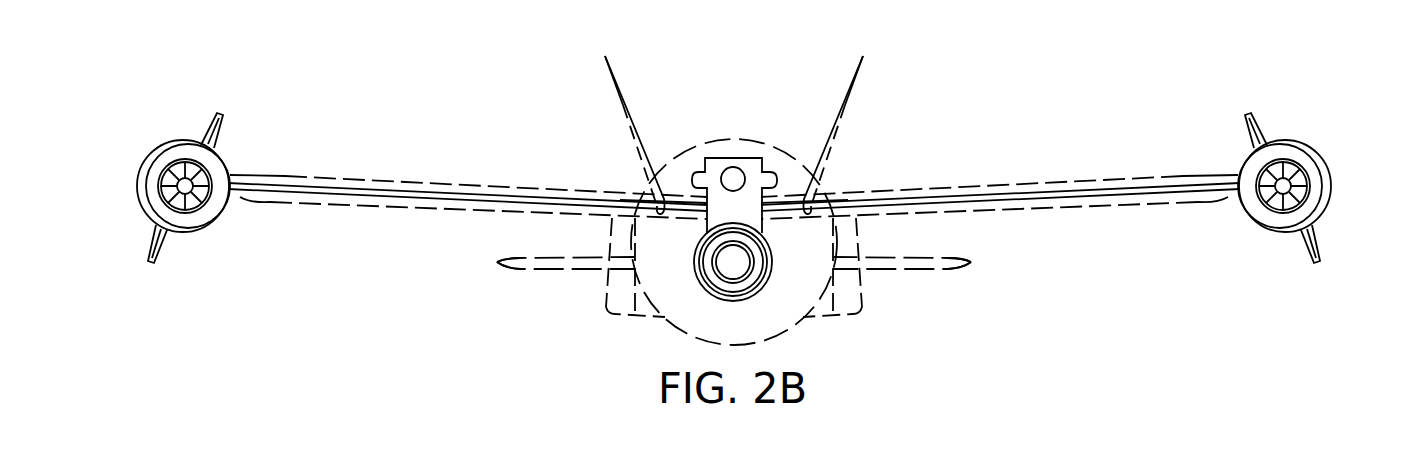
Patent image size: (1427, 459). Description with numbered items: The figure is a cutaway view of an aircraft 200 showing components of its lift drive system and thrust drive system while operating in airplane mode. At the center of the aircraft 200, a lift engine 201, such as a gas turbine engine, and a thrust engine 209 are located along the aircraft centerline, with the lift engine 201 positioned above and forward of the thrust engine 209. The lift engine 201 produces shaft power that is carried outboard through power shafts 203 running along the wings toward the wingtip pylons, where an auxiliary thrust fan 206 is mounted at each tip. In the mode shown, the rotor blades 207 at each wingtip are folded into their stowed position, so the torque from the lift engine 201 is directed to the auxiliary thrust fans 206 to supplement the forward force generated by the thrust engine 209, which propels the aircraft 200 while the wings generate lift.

The aircraft 200 is at (1020, 55).
The lift engine 201 is at (733, 157).
The power shafts 203 is at (460, 204).
The auxiliary thrust fan 206 is at (162, 184).
The rotor blades 207 is at (219, 114).
The thrust engine 209 is at (694, 262).